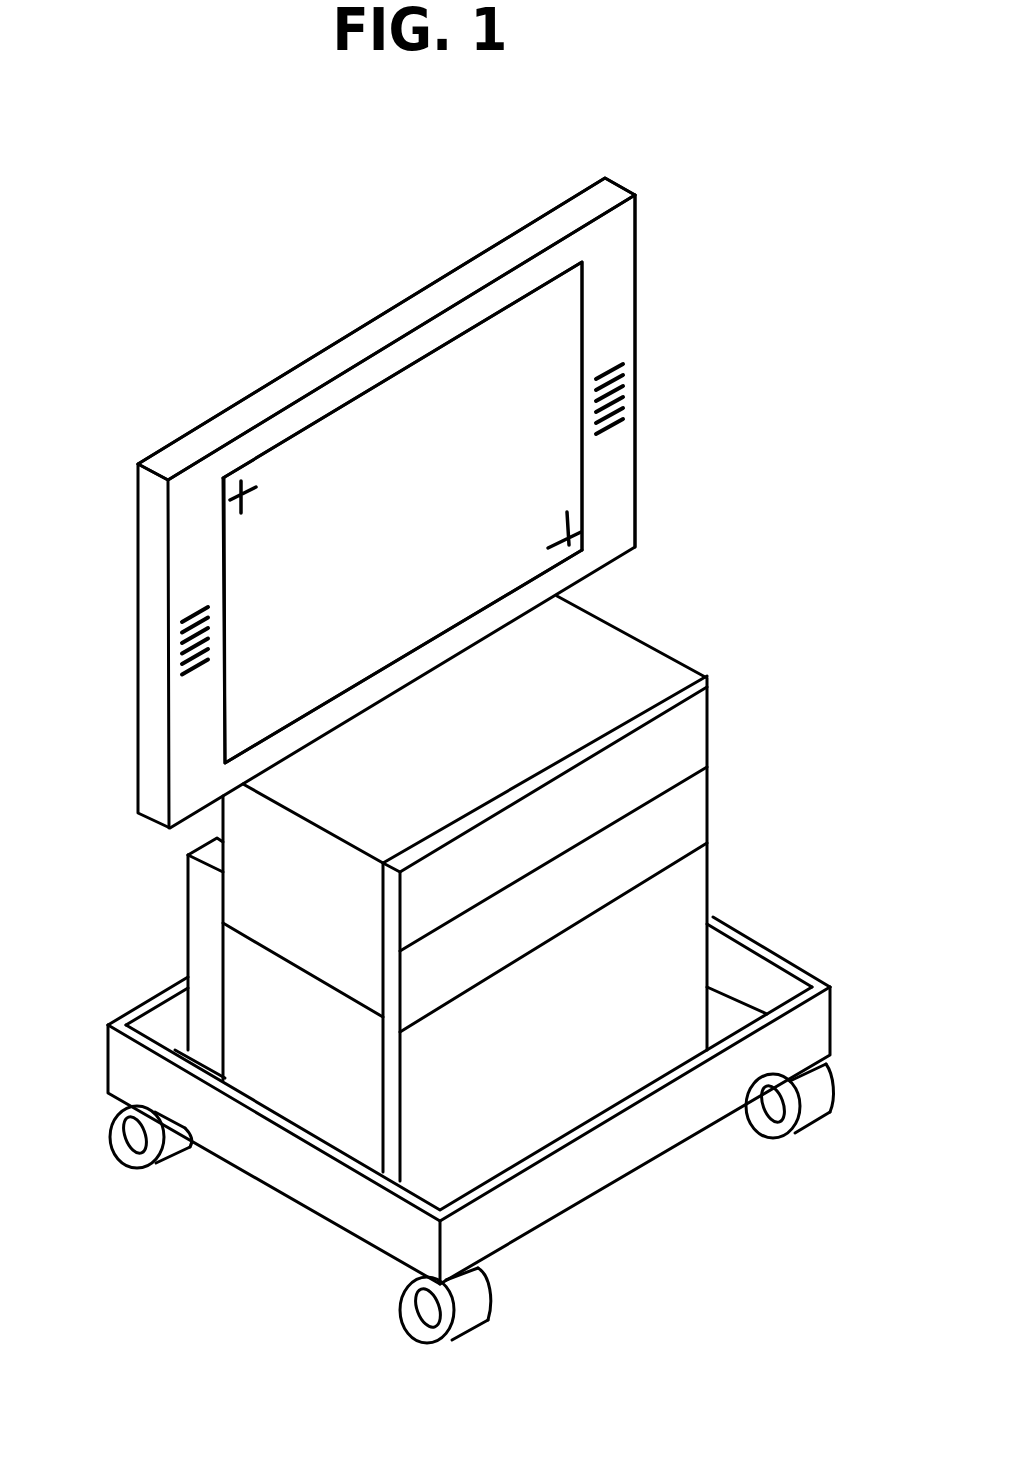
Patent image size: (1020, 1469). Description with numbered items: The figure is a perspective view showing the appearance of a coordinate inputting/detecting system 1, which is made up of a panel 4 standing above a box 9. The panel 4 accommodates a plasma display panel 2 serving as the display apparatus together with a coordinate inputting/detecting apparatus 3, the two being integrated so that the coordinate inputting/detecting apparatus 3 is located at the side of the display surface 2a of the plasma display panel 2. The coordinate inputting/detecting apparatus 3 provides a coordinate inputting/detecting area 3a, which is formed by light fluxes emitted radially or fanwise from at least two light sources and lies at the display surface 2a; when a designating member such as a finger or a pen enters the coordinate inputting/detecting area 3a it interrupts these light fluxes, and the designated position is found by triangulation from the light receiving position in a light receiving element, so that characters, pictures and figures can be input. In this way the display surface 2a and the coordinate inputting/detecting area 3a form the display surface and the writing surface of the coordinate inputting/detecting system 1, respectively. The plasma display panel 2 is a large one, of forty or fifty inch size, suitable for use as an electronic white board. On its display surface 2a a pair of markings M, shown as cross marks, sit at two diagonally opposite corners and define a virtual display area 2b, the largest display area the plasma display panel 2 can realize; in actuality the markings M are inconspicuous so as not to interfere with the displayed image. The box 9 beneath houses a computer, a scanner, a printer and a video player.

The coordinate inputting/detecting system 1 is at (688, 249).
The plasma display panel 2 is at (357, 440).
The display surface 2a is at (533, 345).
The virtual display area 2b is at (254, 718).
The coordinate inputting/detecting apparatus 3 is at (187, 543).
The coordinate inputting/detecting area 3a is at (545, 448).
The panel 4 is at (468, 262).
The markings M is at (241, 481).
The box 9 is at (645, 911).